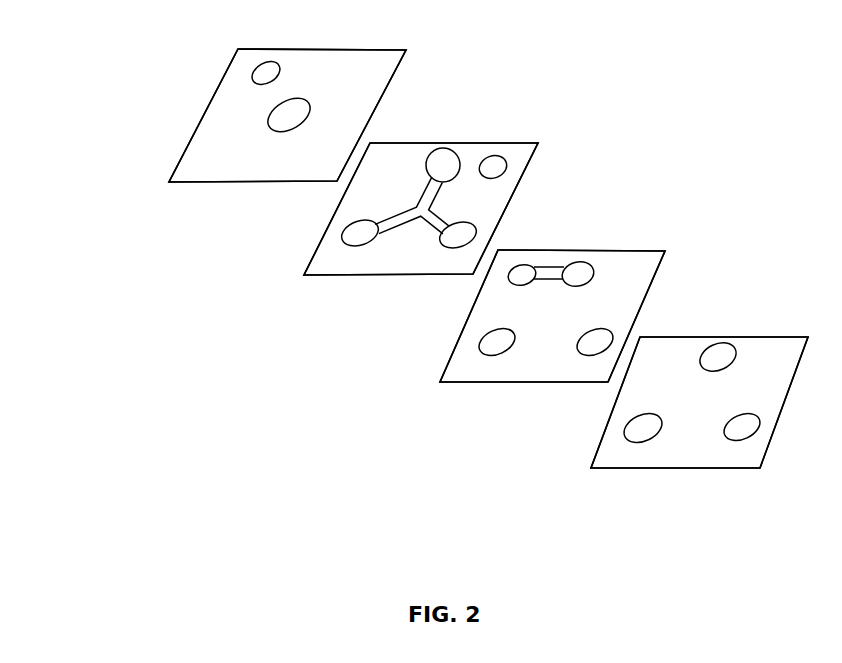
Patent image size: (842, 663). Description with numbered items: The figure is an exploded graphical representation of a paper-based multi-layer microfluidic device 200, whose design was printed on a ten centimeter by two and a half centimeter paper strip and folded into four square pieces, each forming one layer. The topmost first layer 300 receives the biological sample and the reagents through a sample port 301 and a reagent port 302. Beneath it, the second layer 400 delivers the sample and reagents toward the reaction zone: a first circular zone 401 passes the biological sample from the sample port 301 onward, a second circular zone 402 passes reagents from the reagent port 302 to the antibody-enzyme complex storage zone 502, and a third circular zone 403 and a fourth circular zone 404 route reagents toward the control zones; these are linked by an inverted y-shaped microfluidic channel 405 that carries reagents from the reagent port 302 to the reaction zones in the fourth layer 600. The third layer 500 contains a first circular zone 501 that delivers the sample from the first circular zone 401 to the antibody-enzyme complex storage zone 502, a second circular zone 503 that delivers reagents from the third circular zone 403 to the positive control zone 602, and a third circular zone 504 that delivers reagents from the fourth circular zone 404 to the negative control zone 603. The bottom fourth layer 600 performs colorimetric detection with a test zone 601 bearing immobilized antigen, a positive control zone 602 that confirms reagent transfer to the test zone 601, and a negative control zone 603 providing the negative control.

The multi-layer device 200 is at (679, 121).
The first layer 300 is at (166, 156).
The sample port 301 is at (253, 72).
The reagent port 302 is at (282, 118).
The second layer 400 is at (515, 134).
The first circular zone 401 is at (497, 161).
The second circular zone 402 is at (447, 162).
The third circular zone 403 is at (352, 236).
The fourth circular zone 404 is at (457, 238).
The inverted y-shaped microfluidic channel 405 is at (424, 209).
The third layer 500 is at (638, 240).
The first circular zone 501 is at (523, 274).
The antibody-enzyme complex storage zone 502 is at (578, 274).
The second circular zone 503 is at (594, 345).
The third circular zone 504 is at (488, 343).
The fourth layer 600 is at (771, 327).
The test zone 601 is at (718, 353).
The positive control zone 602 is at (635, 426).
The negative control zone 603 is at (737, 430).